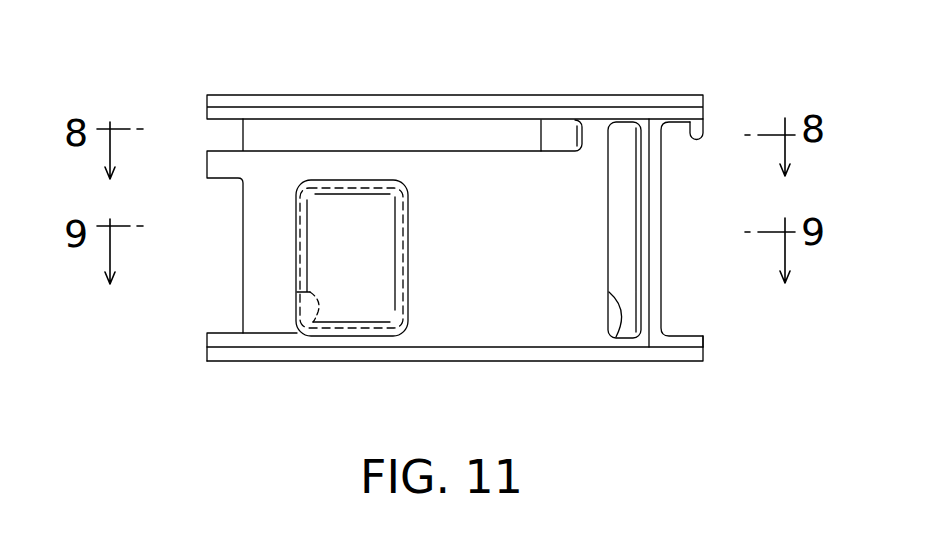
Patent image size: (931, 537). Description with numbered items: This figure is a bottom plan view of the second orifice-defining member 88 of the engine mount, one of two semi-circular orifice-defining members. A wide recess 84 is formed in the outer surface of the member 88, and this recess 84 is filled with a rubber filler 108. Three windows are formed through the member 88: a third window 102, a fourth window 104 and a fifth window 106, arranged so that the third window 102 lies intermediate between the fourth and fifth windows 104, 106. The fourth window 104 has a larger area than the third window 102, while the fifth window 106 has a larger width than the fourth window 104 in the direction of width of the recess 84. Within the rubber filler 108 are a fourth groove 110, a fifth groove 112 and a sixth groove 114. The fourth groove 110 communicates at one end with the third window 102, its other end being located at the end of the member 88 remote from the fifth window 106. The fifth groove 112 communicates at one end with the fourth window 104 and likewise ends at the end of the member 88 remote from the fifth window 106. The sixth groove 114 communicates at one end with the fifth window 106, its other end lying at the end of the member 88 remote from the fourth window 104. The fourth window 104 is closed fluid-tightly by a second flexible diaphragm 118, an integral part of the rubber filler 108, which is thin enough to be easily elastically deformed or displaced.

The recess 84 is at (537, 348).
The second orifice-defining member 88 is at (462, 353).
The third window 102 is at (544, 140).
The fourth window 104 is at (318, 322).
The fifth window 106 is at (622, 297).
The rubber filler 108 is at (463, 172).
The fourth groove 110 is at (340, 119).
The fifth groove 112 is at (278, 333).
The sixth groove 114 is at (707, 128).
The second flexible diaphragm 118 is at (368, 297).